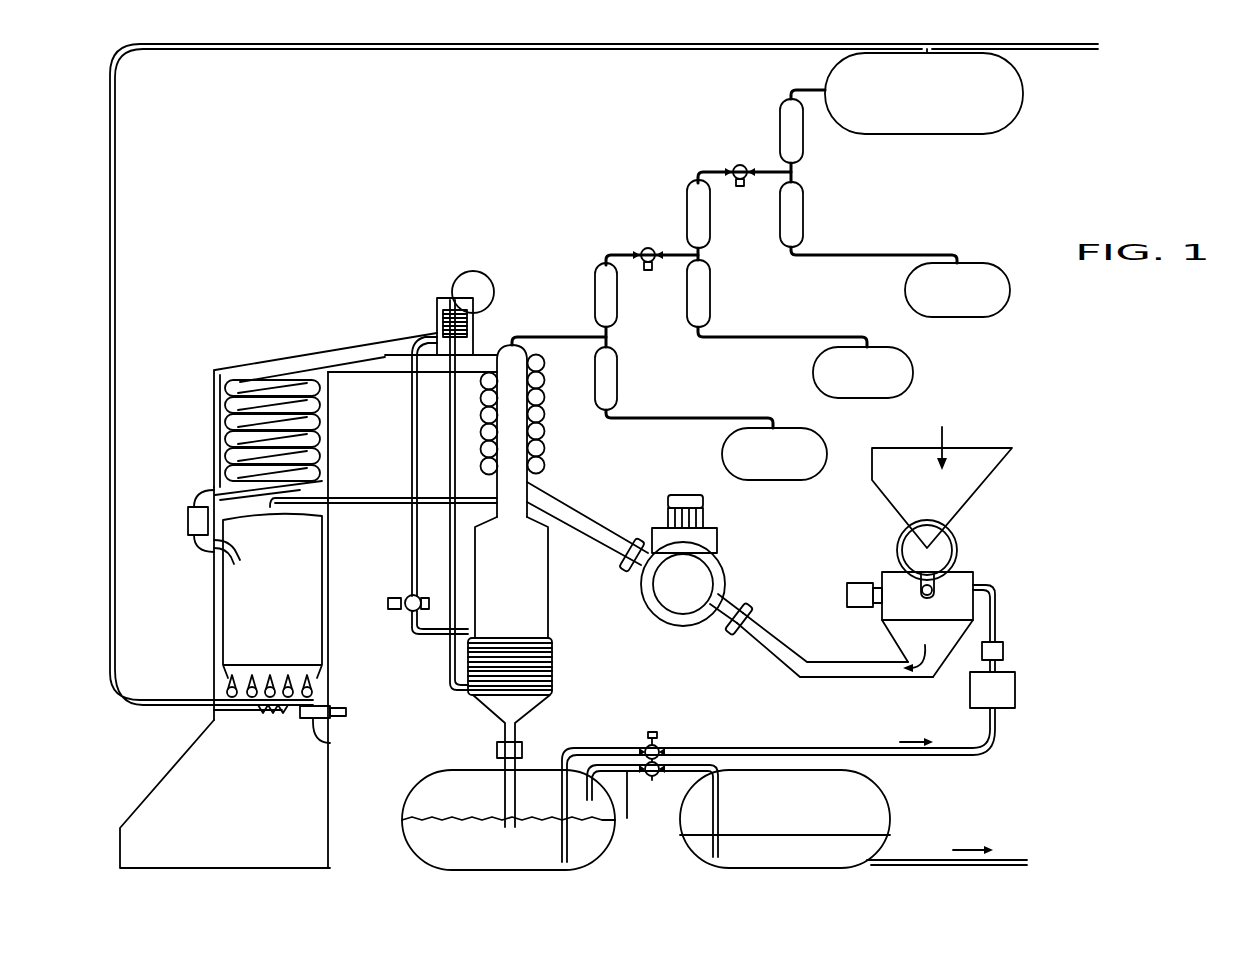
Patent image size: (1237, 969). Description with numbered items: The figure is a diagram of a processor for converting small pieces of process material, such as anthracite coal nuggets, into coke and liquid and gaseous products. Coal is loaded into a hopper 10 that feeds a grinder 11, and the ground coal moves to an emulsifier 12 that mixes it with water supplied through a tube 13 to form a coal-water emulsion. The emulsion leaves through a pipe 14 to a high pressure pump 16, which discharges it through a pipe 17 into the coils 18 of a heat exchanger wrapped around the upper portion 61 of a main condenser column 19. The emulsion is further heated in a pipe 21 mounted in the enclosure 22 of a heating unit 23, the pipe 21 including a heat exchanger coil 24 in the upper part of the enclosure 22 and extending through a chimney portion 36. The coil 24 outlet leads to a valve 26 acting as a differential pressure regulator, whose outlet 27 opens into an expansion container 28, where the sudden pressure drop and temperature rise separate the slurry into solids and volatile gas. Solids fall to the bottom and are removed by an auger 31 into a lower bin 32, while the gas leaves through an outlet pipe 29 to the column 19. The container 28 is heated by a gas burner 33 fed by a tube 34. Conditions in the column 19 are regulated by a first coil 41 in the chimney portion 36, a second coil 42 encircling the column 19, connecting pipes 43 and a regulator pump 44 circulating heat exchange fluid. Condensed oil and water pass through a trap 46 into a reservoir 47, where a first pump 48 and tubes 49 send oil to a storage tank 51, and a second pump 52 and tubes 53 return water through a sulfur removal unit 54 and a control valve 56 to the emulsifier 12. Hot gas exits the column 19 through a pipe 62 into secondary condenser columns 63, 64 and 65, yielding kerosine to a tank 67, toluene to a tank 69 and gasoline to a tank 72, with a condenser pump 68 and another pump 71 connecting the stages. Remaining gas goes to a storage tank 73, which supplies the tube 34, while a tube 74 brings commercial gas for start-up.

The hopper 10 is at (993, 486).
The grinder 11 is at (958, 545).
The emulsifier 12 is at (960, 580).
The tube 13 is at (998, 627).
The flow conduit or pipe 14 is at (845, 680).
The high pressure pump 16 is at (728, 570).
The pipe 17 is at (598, 522).
The heat exchanger coils 18 is at (546, 451).
The main condenser column 19 is at (549, 604).
The pipe 21 is at (320, 358).
The enclosure 22 is at (218, 368).
The heating unit 23 is at (208, 595).
The heat exchanger coil 24 is at (226, 420).
The valve 26 is at (186, 518).
The outlet 27 is at (241, 554).
The expansion container 28 is at (220, 633).
The outlet pipe 29 is at (363, 500).
The auger 31 is at (333, 743).
The lower bin 32 is at (147, 790).
The gas burner 33 is at (232, 704).
The tube 34 is at (113, 698).
The chimney portion 36 is at (396, 336).
The first coil 41 is at (437, 303).
The second coil 42 is at (553, 670).
The pipes 43 is at (450, 432).
The regulator pump 44 is at (404, 597).
The trap 46 is at (523, 748).
The reservoir 47 is at (610, 855).
The first pump 48 is at (652, 780).
The tubes 49 is at (680, 777).
The storage tank 51 is at (890, 793).
The second pump 52 is at (644, 731).
The tubes 53 is at (704, 748).
The sulfur removal unit 54 is at (1018, 686).
The control valve 56 is at (1006, 652).
The upper portion 61 is at (513, 398).
The pipe 62 is at (528, 336).
The secondary condenser column 63 is at (576, 288).
The secondary condenser column 64 is at (674, 196).
The secondary condenser column 65 is at (764, 112).
The tank 67 is at (773, 463).
The condenser pump 68 is at (648, 247).
The tank 69 is at (895, 373).
The pump 71 is at (742, 165).
The tank 72 is at (986, 297).
The storage tank 73 is at (938, 120).
The tube 74 is at (1060, 49).